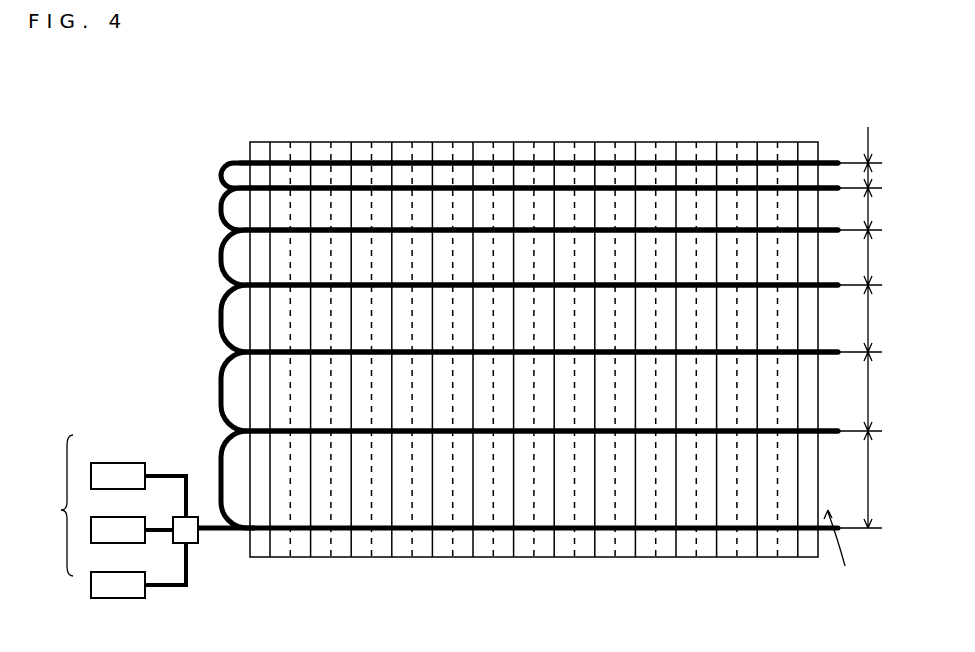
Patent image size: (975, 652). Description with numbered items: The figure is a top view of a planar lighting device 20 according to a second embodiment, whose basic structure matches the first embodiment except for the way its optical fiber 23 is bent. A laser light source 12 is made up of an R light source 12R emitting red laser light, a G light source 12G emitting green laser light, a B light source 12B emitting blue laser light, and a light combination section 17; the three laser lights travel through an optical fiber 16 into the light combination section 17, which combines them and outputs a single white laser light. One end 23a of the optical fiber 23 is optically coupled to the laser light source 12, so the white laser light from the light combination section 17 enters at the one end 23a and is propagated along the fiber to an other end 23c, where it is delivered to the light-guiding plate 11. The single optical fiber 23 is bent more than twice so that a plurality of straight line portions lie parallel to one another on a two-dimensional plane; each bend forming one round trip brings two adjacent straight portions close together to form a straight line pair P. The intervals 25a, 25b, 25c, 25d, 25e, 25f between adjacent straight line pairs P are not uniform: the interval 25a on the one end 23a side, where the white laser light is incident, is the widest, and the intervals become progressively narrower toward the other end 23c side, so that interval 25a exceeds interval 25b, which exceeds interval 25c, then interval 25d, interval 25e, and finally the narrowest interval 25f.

The planar lighting device 20 is at (187, 94).
The light-guiding plate 11 is at (316, 142).
The optical fiber 23 is at (223, 365).
The one end of the optical fiber 23a is at (203, 536).
The other end of the optical fiber 23c is at (238, 158).
The light combination section 17 is at (190, 517).
The optical fiber 16 is at (170, 589).
The laser light source 12 is at (54, 505).
The R light source 12R is at (140, 463).
The G light source 12G is at (140, 517).
The B light source 12B is at (140, 572).
The interval 25a is at (876, 479).
The interval 25b is at (876, 391).
The interval 25c is at (875, 318).
The interval 25d is at (876, 257).
The interval 25e is at (876, 209).
The interval 25f is at (874, 160).
The straight line pair P is at (843, 546).